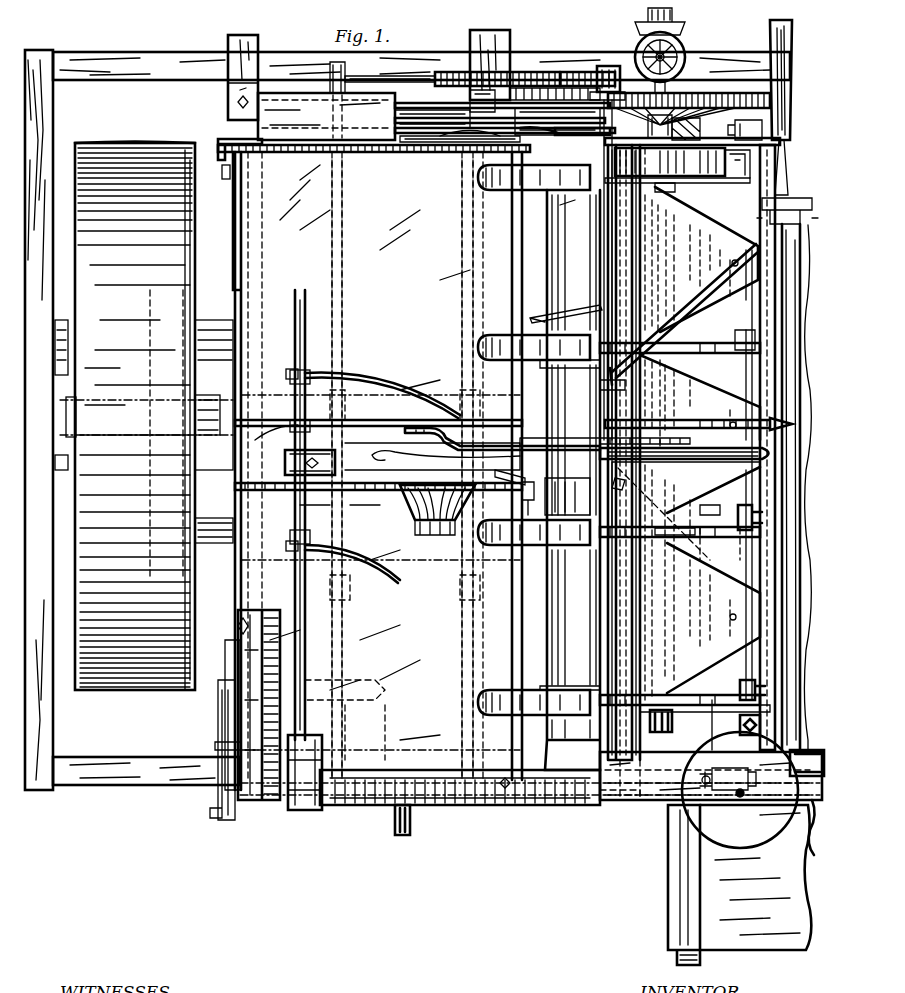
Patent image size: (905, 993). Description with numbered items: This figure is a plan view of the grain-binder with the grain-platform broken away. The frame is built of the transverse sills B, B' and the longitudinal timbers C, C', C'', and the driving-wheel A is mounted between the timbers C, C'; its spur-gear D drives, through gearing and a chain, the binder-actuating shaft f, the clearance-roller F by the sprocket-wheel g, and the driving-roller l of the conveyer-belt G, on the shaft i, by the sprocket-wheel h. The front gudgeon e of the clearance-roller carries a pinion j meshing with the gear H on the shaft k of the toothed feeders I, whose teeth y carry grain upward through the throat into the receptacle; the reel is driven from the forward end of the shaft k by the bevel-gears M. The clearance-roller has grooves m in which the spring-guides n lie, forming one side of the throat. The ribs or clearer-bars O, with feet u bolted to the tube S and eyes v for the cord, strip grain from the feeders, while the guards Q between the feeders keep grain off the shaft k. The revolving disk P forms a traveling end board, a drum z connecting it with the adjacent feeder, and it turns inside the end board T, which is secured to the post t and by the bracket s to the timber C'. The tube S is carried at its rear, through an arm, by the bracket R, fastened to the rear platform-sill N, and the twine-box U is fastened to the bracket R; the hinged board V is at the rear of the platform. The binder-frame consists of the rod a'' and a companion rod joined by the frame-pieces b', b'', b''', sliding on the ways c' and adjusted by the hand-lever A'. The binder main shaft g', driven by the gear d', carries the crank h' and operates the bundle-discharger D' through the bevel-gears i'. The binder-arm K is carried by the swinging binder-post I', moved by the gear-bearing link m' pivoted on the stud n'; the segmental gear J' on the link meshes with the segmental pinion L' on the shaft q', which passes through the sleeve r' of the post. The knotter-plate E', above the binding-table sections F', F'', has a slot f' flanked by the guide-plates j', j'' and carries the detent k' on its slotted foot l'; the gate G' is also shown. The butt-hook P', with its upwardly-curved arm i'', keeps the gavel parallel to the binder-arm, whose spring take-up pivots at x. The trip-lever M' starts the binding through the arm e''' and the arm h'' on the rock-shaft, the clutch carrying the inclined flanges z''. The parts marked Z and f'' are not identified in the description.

The driving-wheel A is at (145, 431).
The hand-lever A' is at (231, 715).
The transverse sill B is at (421, 66).
The transverse sill B' is at (146, 771).
The longitudinal timber C is at (39, 420).
The longitudinal timber C' is at (235, 68).
The longitudinal timber C'' is at (505, 62).
The spur-gear D is at (135, 416).
The bundle-discharger D' is at (295, 550).
The knotter-plate E' is at (432, 453).
The clearance-roller F is at (572, 480).
The binding-table section F' is at (380, 622).
The binding-table section F'' is at (380, 286).
The conveyer-belt G is at (787, 386).
The gate G' is at (502, 433).
The gear H is at (692, 112).
The feeder I is at (617, 452).
The swinging binder-post I' is at (505, 119).
The segmental gear J' is at (525, 66).
The binder-arm K is at (686, 494).
The segmental pinion L' is at (608, 56).
The bevel-gears M is at (672, 50).
The bundle-sizer or trip-lever M' is at (712, 425).
The rear sill of the platform N is at (807, 763).
The rib or clearer-bar O is at (712, 535).
The revolving disk P is at (677, 163).
The butt-hook P' is at (679, 317).
The guard Q is at (700, 443).
The bracket R is at (688, 903).
The rod or pipe S is at (767, 447).
The end board T is at (374, 467).
The twine-box U is at (740, 790).
The hinged board V is at (755, 877).
The bar Z is at (684, 443).
The rod of binder-frame a'' is at (511, 470).
The frame-piece b' is at (432, 106).
The frame-piece b'' is at (373, 393).
The frame-piece b''' is at (343, 569).
The ways c' is at (226, 221).
The gear d' is at (340, 508).
The front gudgeon e is at (555, 91).
The arm e''' is at (580, 122).
The binder-actuating shaft f is at (407, 820).
The slot f' is at (437, 498).
The spring f'' is at (500, 149).
The sprocket-wheel g is at (530, 798).
The main shaft of the binder g' is at (348, 470).
The sprocket-wheel h is at (623, 809).
The crank h' is at (326, 100).
The arm h'' is at (460, 154).
The shaft i is at (711, 803).
The bevel-gears i' is at (345, 695).
The upwardly-curved arm i'' is at (562, 309).
The pinion j is at (569, 50).
The plate j' is at (526, 497).
The plate j'' is at (559, 427).
The shaft k is at (671, 405).
The detent k' is at (295, 450).
The driving-roller l is at (694, 723).
The slotted foot l' is at (431, 463).
The grooves m is at (564, 525).
The gear-bearing link m' is at (390, 68).
The spring-guides n is at (534, 440).
The stud n' is at (480, 100).
The shaft q' is at (675, 401).
The horizontal extension or sleeve r' is at (602, 270).
The bracket s is at (220, 138).
The post t is at (768, 128).
The feet u is at (754, 601).
The eyes v is at (697, 639).
The pivot x is at (567, 496).
The teeth y is at (654, 514).
The drum z is at (643, 162).
The inclined flanges z'' is at (507, 474).